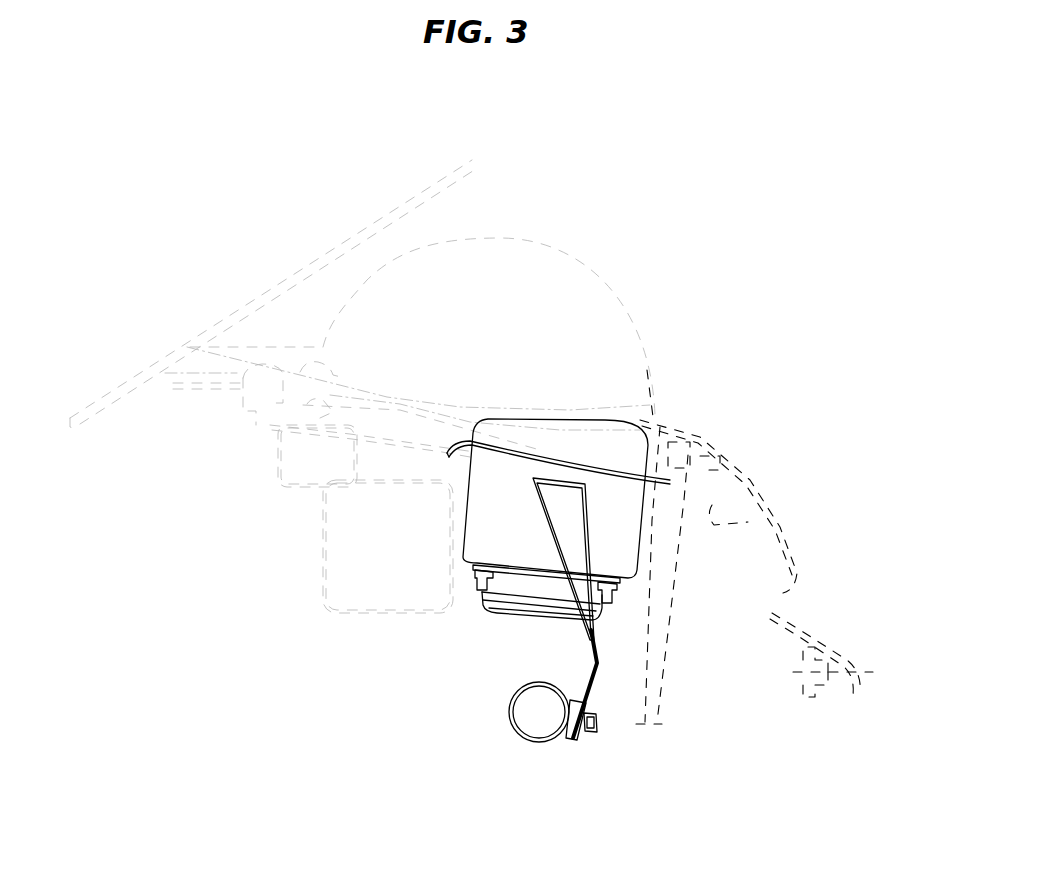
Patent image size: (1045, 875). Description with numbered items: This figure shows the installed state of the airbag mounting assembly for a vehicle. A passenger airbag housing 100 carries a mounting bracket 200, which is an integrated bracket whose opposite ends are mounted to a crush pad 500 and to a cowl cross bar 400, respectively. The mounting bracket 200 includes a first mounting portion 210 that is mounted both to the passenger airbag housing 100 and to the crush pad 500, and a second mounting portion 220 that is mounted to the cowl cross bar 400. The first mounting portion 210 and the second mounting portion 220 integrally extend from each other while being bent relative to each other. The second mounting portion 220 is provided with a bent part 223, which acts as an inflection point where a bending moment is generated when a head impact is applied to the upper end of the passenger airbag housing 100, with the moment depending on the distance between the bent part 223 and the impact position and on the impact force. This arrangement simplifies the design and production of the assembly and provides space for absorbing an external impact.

The passenger airbag housing 100 is at (495, 523).
The mounting bracket 200 is at (506, 646).
The first mounting portion 210 is at (560, 553).
The second mounting portion 220 is at (551, 739).
The bent part 223 is at (597, 665).
The cowl cross bar 400 is at (565, 722).
The crush pad 500 is at (675, 428).